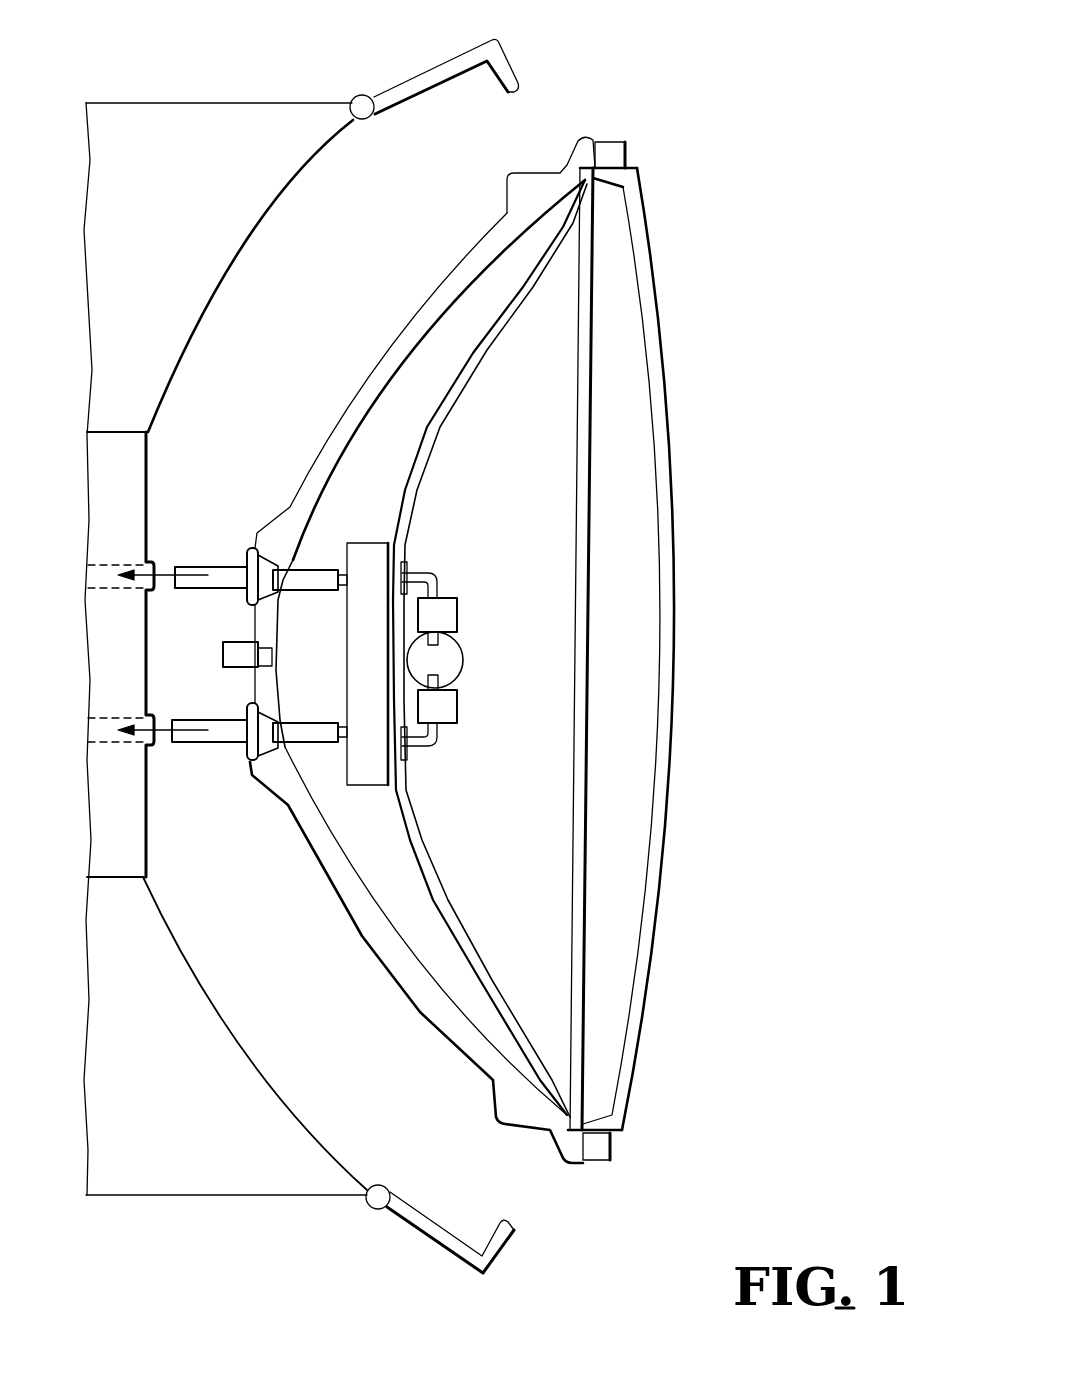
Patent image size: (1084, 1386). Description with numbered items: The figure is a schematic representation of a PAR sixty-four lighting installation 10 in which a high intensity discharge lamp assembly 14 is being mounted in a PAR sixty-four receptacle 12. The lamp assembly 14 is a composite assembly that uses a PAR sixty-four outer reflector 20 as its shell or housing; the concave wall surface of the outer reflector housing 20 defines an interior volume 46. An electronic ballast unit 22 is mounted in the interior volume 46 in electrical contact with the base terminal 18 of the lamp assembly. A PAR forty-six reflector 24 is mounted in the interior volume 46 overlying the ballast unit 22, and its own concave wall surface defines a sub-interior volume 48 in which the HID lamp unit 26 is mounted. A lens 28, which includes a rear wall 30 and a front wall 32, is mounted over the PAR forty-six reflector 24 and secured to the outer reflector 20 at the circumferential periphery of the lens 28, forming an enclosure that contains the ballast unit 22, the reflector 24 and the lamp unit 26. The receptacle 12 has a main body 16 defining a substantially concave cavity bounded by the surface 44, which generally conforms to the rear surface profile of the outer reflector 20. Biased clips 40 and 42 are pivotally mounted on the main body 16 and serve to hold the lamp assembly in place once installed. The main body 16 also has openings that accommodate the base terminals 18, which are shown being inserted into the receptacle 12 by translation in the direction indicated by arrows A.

The PAR 64 lighting installation 10 is at (703, 45).
The PAR 64 receptacle 12 is at (276, 220).
The high intensity discharge lamp assembly 14 is at (644, 666).
The main body 16 is at (127, 458).
The base terminal 18 is at (207, 778).
The PAR 64 outer reflector 20 is at (365, 910).
The electronic ballast unit 22 is at (353, 652).
The PAR 46 reflector 24 is at (417, 813).
The HID lamp unit 26 is at (473, 603).
The lens 28 is at (606, 1147).
The rear wall 30 is at (570, 870).
The front wall 32 is at (672, 758).
The biased clip 40 is at (423, 67).
The biased clip 42 is at (418, 1230).
The surface 44 is at (184, 964).
The interior volume 46 is at (381, 512).
The sub-interior volume 48 is at (492, 512).
The arrows A is at (153, 578).